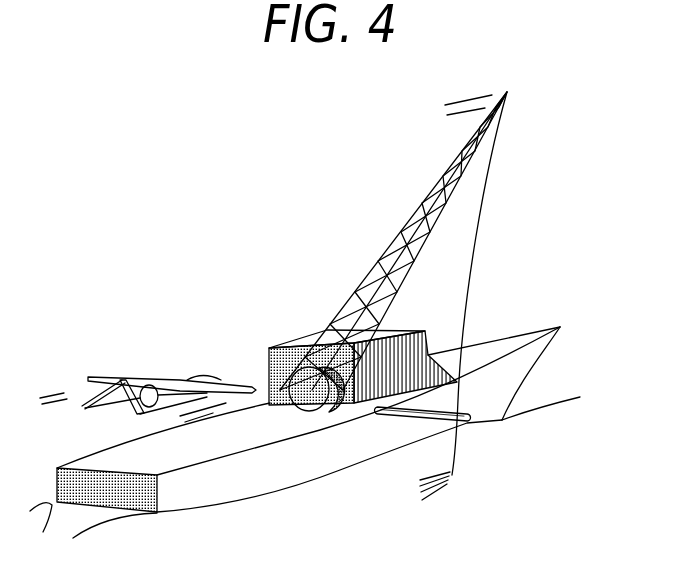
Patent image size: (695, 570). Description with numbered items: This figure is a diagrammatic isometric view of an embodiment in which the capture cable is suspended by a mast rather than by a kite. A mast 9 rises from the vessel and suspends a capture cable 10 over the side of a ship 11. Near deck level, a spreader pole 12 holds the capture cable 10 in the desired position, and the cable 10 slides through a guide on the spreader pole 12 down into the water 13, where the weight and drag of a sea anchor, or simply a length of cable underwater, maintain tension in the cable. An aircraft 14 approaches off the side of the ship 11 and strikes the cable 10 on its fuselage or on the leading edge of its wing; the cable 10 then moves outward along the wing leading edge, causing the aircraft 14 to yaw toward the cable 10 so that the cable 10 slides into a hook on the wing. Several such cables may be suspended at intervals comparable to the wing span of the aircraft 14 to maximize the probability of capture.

The mast 9 is at (443, 177).
The capture cable 10 is at (493, 198).
The ship 11 is at (528, 320).
The spreader pole 12 is at (428, 420).
The water 13 is at (462, 478).
The aircraft 14 is at (192, 368).